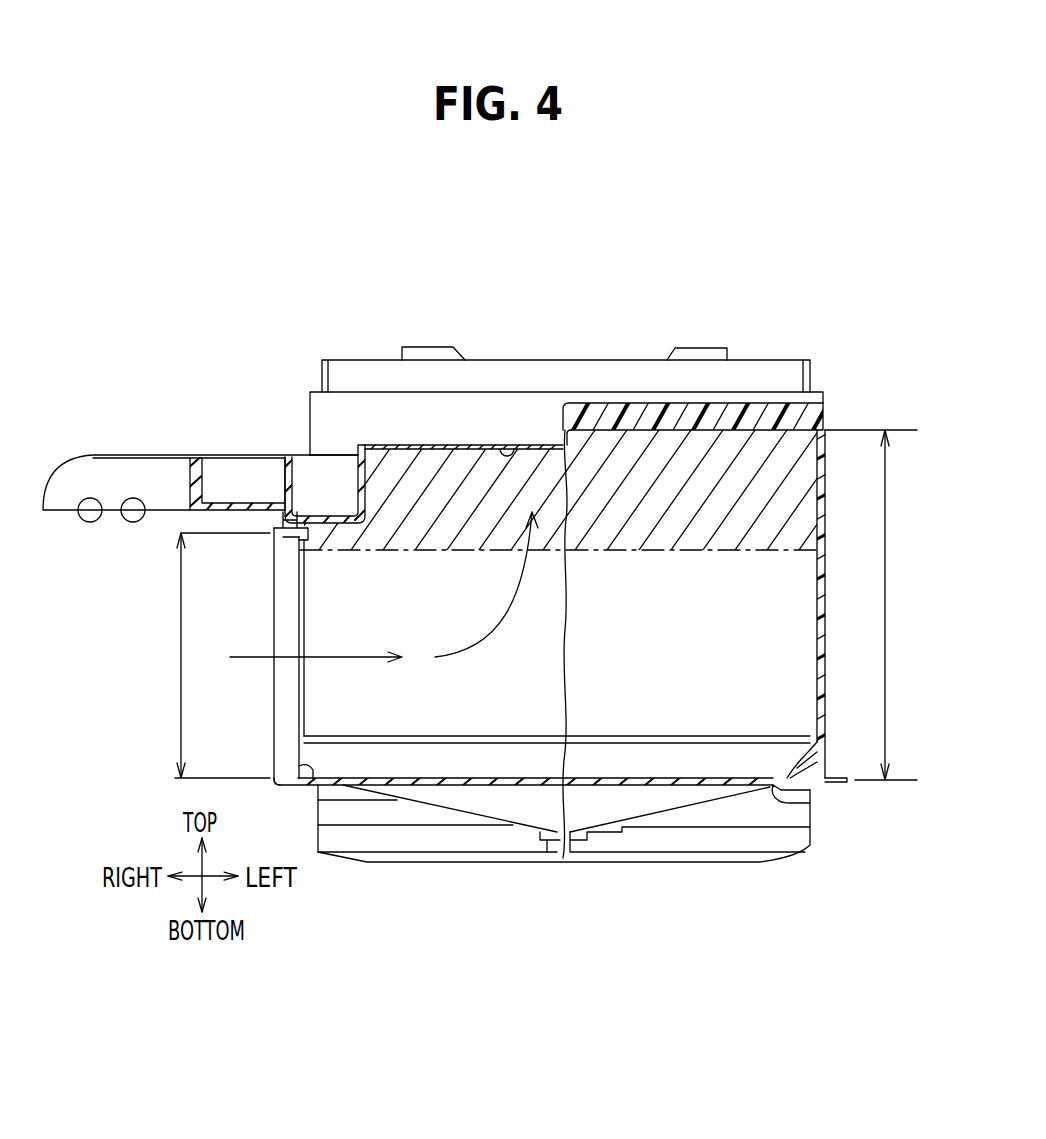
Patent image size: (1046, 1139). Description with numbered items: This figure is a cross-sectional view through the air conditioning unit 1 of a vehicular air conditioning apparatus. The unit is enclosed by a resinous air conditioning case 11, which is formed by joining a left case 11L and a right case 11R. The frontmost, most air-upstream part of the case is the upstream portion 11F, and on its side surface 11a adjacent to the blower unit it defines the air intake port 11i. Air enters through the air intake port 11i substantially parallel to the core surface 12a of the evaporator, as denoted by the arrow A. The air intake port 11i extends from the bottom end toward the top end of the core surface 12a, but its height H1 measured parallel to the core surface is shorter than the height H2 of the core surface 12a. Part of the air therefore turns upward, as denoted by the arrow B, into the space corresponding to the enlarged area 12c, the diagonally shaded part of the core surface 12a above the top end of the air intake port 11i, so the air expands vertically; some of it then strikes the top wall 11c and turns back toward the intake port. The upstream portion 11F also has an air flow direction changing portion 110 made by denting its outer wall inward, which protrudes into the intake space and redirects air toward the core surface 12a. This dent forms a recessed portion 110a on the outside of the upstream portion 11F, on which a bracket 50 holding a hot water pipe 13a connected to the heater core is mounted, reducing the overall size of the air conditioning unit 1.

The air conditioning unit 1 is at (773, 355).
The air conditioning case 11 is at (622, 260).
The right case 11R is at (540, 360).
The left case 11L is at (620, 360).
The upstream portion 11F is at (826, 412).
The side surface 11a is at (358, 457).
The top wall 11c is at (505, 447).
The air intake port 11i is at (274, 598).
The core surface 12a is at (757, 581).
The enlarged area 12c is at (472, 501).
The hot water pipe 13a is at (133, 523).
The bracket 50 is at (82, 455).
The air flow direction changing portion 110 is at (387, 445).
The recessed portion 110a is at (322, 517).
The arrow A is at (252, 657).
The arrow B is at (568, 527).
The height of air intake port H1 is at (181, 640).
The height of core surface H2 is at (886, 622).